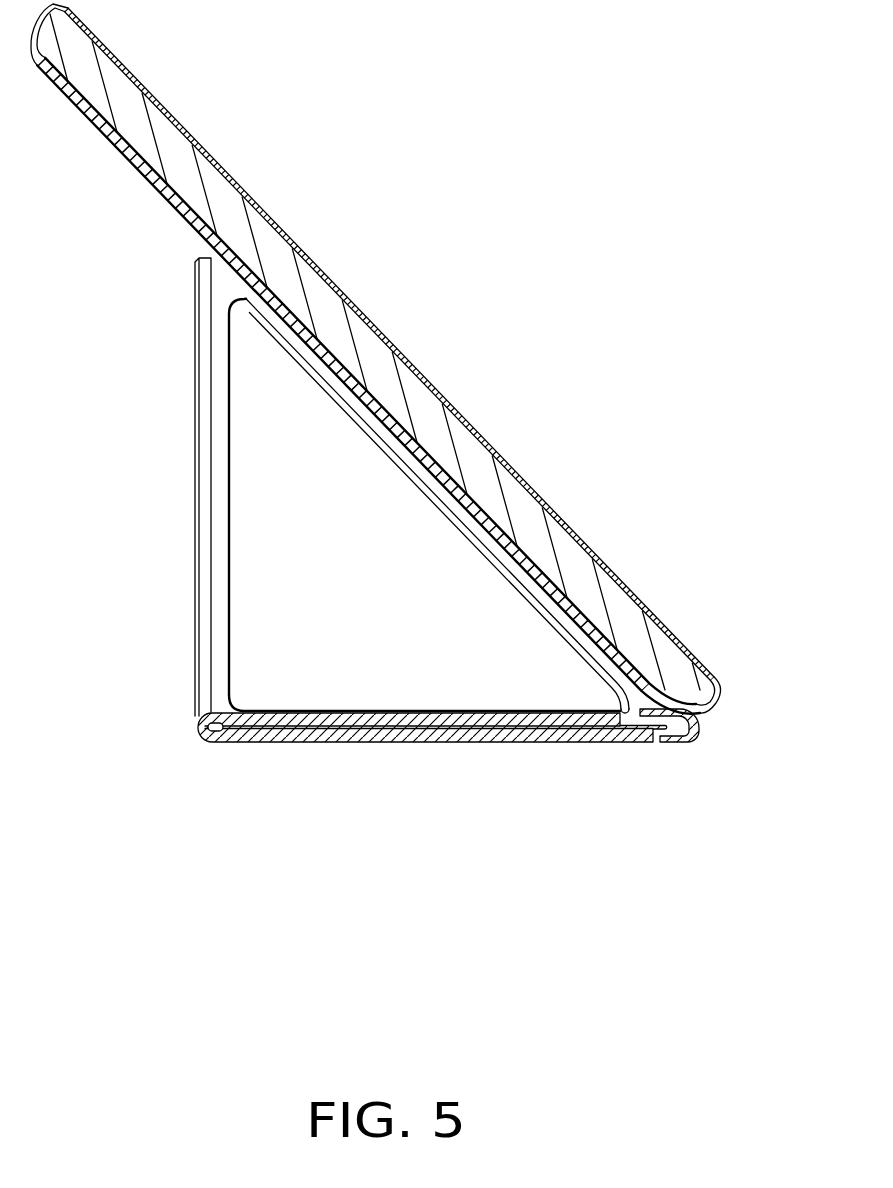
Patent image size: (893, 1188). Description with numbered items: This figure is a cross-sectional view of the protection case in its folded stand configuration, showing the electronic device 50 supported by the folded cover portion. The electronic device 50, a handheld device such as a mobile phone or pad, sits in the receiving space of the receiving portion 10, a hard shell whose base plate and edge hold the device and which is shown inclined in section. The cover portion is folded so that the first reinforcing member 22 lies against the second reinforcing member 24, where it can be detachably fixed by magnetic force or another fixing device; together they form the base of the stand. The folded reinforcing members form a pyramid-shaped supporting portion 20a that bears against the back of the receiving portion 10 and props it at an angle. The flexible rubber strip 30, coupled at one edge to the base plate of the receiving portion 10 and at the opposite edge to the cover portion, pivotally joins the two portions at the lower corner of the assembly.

The receiving portion 10 is at (152, 180).
The supporting portion 20a is at (195, 397).
The first reinforcing member 22 is at (308, 720).
The second reinforcing member 24 is at (325, 735).
The flexible rubber strip 30 is at (680, 734).
The electronic device 50 is at (425, 400).